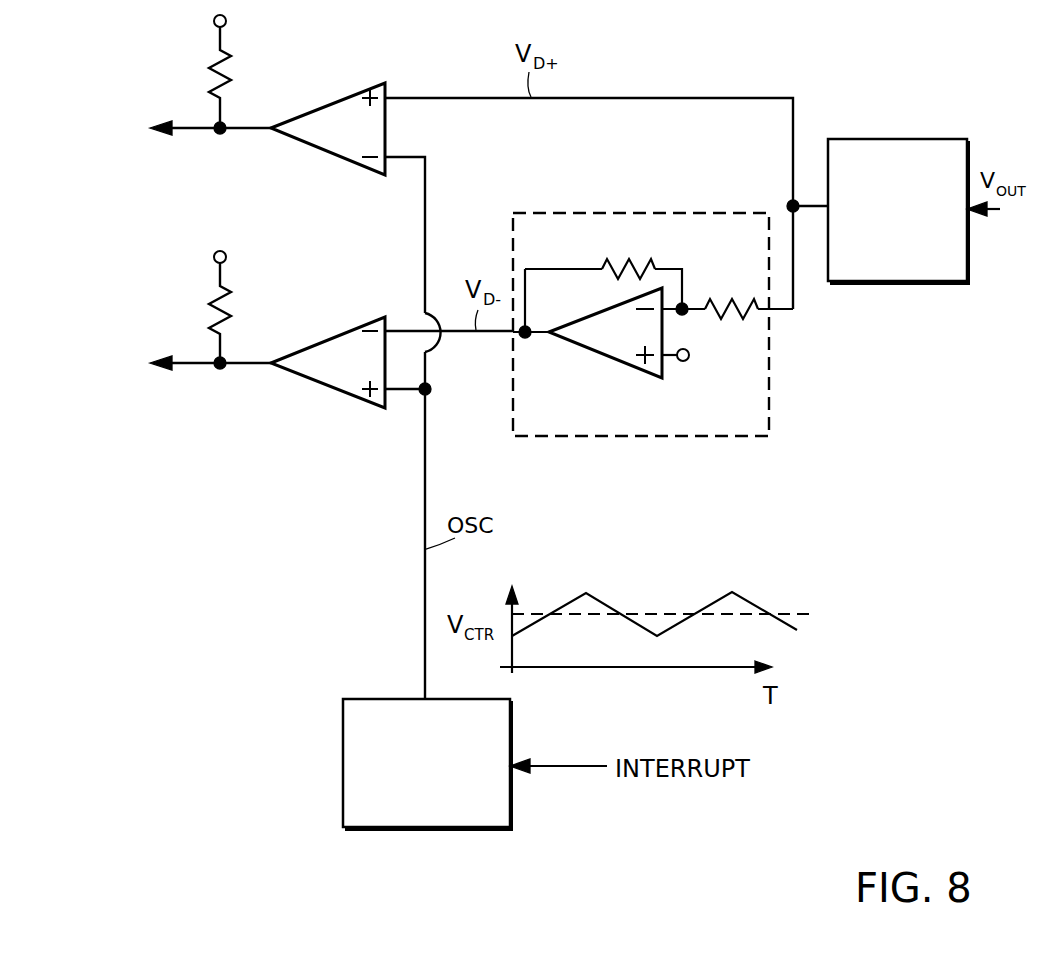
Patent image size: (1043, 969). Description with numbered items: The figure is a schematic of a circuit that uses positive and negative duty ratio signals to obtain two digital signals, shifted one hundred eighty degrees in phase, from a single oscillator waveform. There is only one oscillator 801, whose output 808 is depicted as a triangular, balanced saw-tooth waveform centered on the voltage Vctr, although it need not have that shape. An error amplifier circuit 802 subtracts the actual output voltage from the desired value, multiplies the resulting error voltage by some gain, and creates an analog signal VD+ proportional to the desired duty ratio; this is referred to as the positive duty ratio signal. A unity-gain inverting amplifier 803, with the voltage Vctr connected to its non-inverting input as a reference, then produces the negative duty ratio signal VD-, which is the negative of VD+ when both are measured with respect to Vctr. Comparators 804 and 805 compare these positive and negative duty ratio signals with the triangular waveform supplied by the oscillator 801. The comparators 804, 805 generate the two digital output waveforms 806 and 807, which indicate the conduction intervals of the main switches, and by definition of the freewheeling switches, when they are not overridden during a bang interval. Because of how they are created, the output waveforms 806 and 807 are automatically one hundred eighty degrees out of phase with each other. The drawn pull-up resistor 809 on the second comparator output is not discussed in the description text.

The oscillator 801 is at (428, 829).
The error amplifier circuit 802 is at (903, 283).
The unity-gain inverting amplifier 803 is at (640, 437).
The comparator 804 is at (333, 158).
The comparator 805 is at (333, 392).
The digital output waveform 806 is at (180, 126).
The digital output waveform 807 is at (180, 361).
The oscillator output 808 is at (236, 80).
The pull-up resistor 809 is at (236, 317).